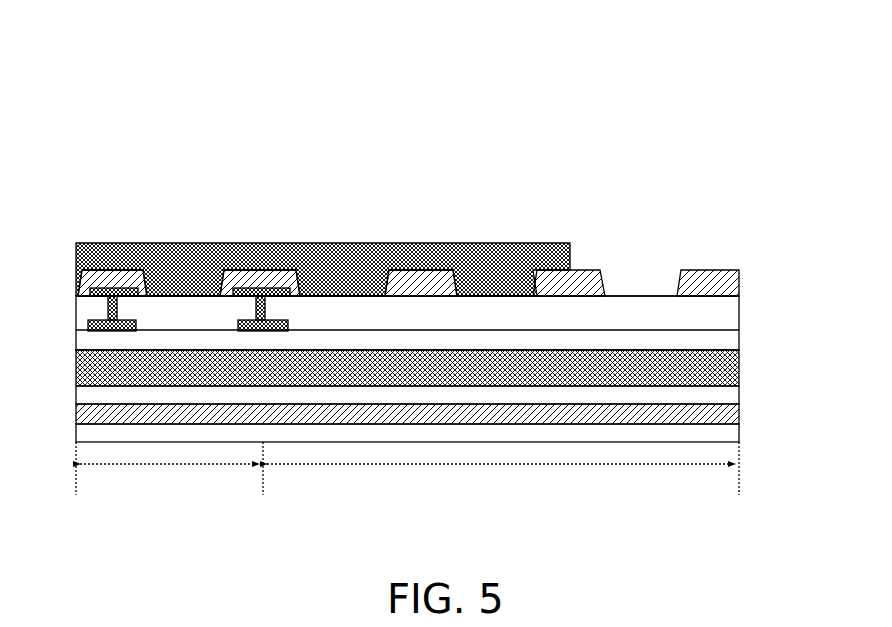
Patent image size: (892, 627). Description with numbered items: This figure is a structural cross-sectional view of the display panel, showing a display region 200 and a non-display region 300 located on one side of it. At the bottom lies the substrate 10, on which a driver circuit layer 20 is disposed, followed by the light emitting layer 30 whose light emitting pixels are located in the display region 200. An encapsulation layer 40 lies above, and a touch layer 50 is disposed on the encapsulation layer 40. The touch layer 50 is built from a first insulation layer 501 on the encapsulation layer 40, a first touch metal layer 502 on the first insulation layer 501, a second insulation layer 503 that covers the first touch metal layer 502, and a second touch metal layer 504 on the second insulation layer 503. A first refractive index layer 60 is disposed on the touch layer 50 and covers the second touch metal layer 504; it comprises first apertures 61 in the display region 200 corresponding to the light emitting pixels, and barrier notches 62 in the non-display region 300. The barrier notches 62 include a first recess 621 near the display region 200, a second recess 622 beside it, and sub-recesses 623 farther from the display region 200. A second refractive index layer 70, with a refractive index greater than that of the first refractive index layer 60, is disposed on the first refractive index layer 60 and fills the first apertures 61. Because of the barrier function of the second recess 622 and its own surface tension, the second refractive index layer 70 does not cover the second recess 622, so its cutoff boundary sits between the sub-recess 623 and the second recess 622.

The substrate 10 is at (727, 430).
The driver circuit layer 20 is at (727, 409).
The light emitting layer 30 is at (727, 391).
The encapsulation layer 40 is at (740, 368).
The touch layer 50 is at (812, 290).
The first insulation layer 501 is at (728, 338).
The first touch metal layer 502 is at (90, 324).
The second insulation layer 503 is at (728, 308).
The second touch metal layer 504 is at (90, 291).
The first refractive index layer 60 is at (740, 280).
The first apertures 61 is at (183, 260).
The barrier notches 62 is at (398, 60).
The first recess 621 is at (338, 264).
The second recess 622 is at (497, 264).
The sub-recess 623 is at (641, 268).
The second refractive index layer 70 is at (76, 260).
The display region 200 is at (169, 468).
The non-display region 300 is at (503, 468).